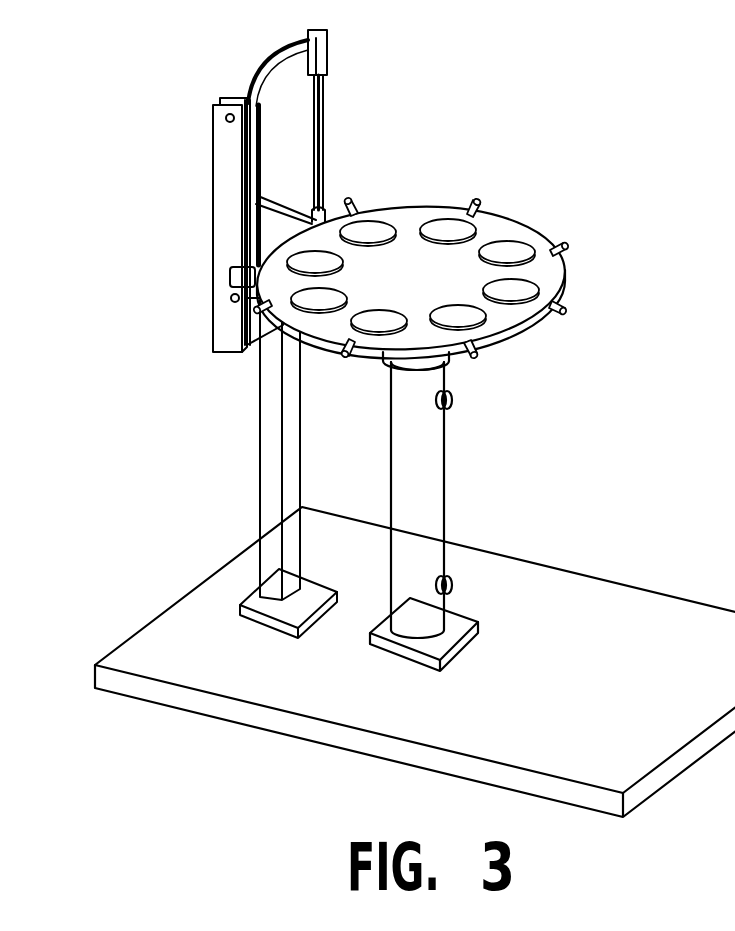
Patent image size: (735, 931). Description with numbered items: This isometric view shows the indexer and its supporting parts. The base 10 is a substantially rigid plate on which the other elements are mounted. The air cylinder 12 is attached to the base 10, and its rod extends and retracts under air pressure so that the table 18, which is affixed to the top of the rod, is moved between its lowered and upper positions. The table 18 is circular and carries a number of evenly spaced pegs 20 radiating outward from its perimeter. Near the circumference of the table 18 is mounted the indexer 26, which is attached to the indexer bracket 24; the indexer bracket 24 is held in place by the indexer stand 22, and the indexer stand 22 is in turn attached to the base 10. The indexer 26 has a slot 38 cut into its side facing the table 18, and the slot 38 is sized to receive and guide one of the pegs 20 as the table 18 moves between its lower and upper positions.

The base 10 is at (190, 590).
The air cylinder 12 is at (447, 500).
The table 18 is at (520, 345).
The pegs 20 is at (578, 297).
The indexer stand 22 is at (262, 420).
The indexer bracket 24 is at (212, 212).
The indexer 26 is at (253, 80).
The slot 38 is at (270, 212).